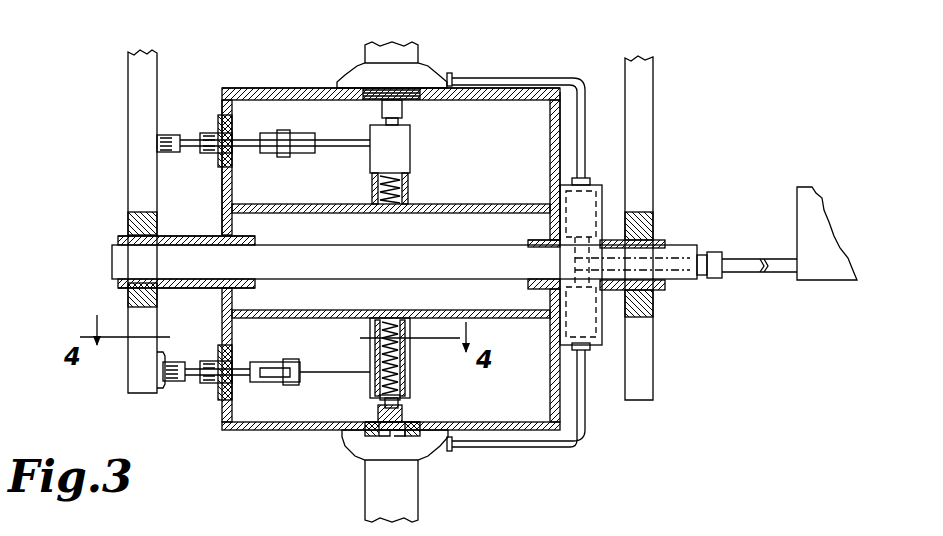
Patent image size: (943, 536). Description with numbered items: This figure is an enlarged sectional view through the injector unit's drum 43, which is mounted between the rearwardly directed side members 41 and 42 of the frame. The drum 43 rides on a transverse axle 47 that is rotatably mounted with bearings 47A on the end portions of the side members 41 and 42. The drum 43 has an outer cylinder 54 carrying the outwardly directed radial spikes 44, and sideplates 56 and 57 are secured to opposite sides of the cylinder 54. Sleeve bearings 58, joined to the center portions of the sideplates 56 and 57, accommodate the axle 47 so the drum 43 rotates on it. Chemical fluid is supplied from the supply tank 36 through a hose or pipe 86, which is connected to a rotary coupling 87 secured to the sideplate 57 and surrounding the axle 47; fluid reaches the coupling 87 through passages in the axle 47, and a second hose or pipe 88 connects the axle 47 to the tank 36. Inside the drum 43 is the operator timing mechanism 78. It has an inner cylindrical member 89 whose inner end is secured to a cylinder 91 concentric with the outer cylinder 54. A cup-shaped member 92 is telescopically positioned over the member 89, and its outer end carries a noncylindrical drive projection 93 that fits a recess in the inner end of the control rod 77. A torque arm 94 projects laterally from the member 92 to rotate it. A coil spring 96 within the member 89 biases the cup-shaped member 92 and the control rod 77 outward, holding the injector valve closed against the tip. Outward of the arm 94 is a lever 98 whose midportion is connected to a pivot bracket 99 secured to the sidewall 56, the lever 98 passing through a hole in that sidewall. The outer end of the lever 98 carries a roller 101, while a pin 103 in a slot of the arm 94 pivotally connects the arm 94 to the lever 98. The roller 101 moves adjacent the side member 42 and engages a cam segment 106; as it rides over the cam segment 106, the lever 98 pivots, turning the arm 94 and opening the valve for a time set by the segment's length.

The supply tank 36 is at (815, 220).
The side member 41 is at (640, 118).
The side member 42 is at (135, 104).
The drum 43 is at (550, 88).
The spikes 44 is at (365, 46).
The axle 47 is at (118, 260).
The bearings 47A is at (118, 283).
The outer cylinder 54 is at (480, 88).
The sideplate 56 is at (222, 185).
The sideplate 57 is at (553, 138).
The sleeve bearings 58 is at (255, 240).
The control rod 77 is at (405, 418).
The operator timing mechanism 78 is at (460, 392).
The hose or pipe 86 is at (487, 447).
The rotary coupling 87 is at (598, 185).
The hose or pipe 88 is at (740, 260).
The inner cylindrical member 89 is at (405, 352).
The cylinder 91 is at (445, 205).
The cup-shaped member 92 is at (368, 390).
The drive projection 93 is at (360, 428).
The torque arm 94 is at (330, 368).
The coil spring 96 is at (395, 364).
The lever 98 is at (238, 380).
The pivot bracket 99 is at (205, 386).
The roller 101 is at (177, 370).
The pin 103 is at (290, 359).
The cam segment 106 is at (160, 388).